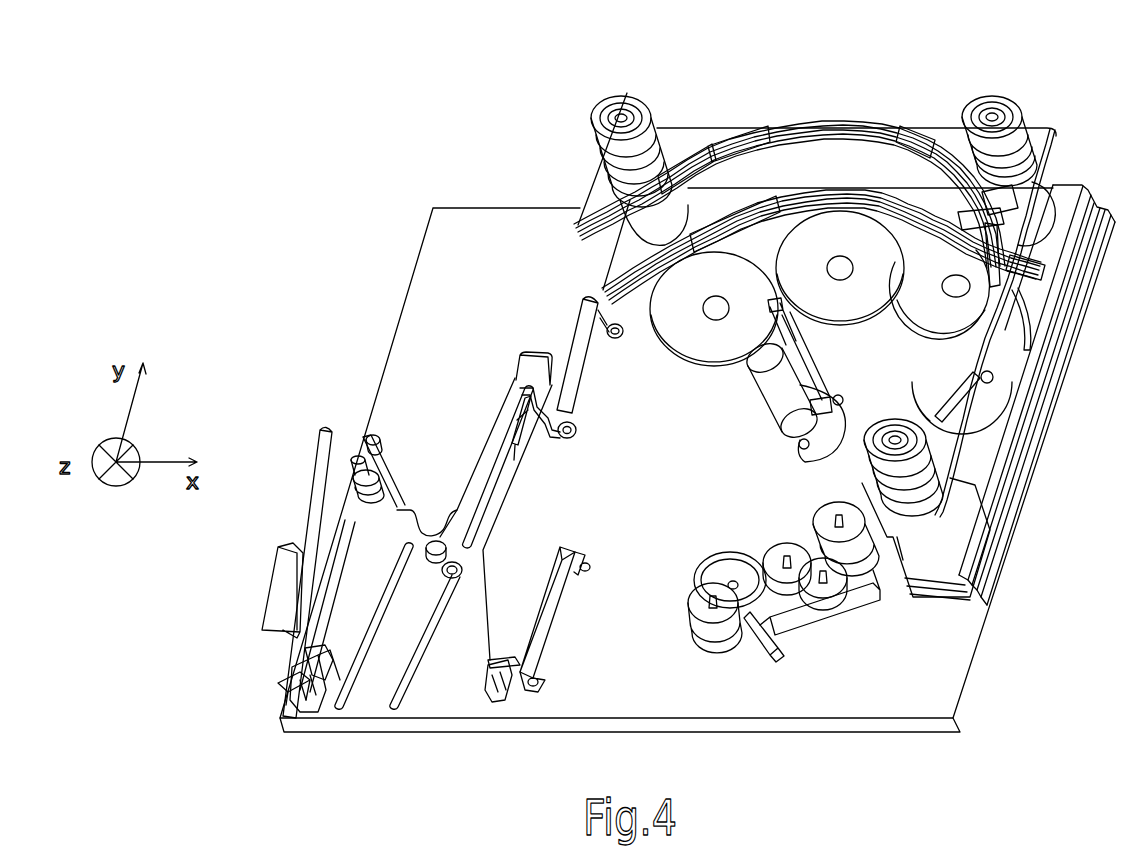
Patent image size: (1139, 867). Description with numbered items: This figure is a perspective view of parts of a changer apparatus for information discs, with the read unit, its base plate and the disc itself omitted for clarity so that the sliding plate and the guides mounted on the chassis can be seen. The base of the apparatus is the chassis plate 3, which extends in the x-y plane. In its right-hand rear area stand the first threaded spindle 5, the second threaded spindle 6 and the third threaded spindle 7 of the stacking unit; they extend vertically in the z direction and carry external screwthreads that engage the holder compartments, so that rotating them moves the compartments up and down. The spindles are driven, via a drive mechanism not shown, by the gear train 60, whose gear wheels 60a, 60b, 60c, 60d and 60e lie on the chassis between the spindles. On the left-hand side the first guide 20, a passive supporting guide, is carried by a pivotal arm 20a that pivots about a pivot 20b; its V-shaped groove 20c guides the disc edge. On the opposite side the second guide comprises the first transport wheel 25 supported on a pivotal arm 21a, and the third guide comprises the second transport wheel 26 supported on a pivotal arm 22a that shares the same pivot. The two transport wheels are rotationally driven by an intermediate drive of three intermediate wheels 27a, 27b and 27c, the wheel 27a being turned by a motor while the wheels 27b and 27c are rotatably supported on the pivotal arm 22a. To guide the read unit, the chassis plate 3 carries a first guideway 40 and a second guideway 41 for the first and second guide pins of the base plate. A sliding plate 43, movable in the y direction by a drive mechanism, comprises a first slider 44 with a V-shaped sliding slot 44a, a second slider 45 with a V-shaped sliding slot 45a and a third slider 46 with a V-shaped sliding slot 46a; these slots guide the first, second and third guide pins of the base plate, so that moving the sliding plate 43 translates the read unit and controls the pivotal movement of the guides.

The chassis plate 3 is at (435, 246).
The first threaded spindle 5 is at (630, 105).
The second threaded spindle 6 is at (1012, 103).
The third threaded spindle 7 is at (955, 524).
The first guide 20 is at (386, 542).
The pivotal arm 20a is at (318, 455).
The pivot 20b is at (357, 455).
The V-shaped groove 20c is at (278, 633).
The pivotal arm 21a is at (747, 640).
The pivotal arm 22a is at (790, 608).
The first transport wheel 25 is at (693, 606).
The second transport wheel 26 is at (848, 505).
The intermediate wheel 27a is at (735, 572).
The intermediate wheel 27b is at (793, 552).
The intermediate wheel 27c is at (833, 593).
The first guideway 40 is at (302, 657).
The second guideway 41 is at (553, 633).
The sliding plate 43 is at (467, 595).
The first slider 44 is at (320, 703).
The V-shaped sliding slot 44a is at (330, 655).
The second slider 45 is at (500, 702).
The V-shaped sliding slot 45a is at (502, 662).
The third slider 46 is at (520, 457).
The V-shaped sliding slot 46a is at (517, 412).
The gear train 60 is at (814, 319).
The gear wheel 60a is at (695, 345).
The gear wheel 60b is at (847, 310).
The gear wheel 60c is at (882, 330).
The gear wheel 60d is at (925, 381).
The gear wheel 60e is at (887, 540).